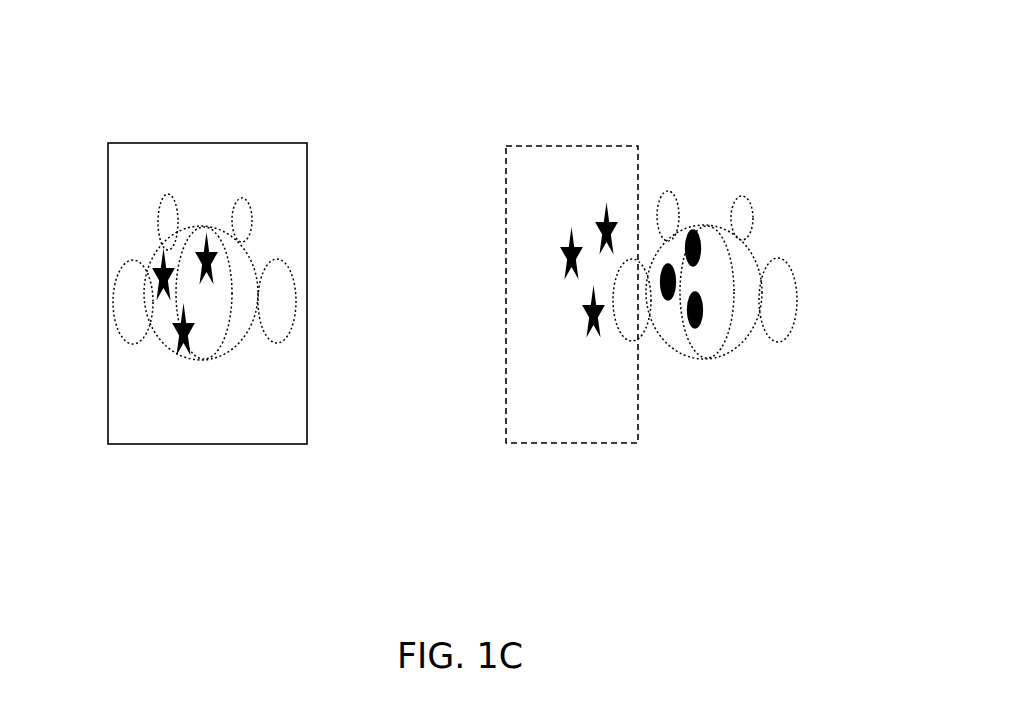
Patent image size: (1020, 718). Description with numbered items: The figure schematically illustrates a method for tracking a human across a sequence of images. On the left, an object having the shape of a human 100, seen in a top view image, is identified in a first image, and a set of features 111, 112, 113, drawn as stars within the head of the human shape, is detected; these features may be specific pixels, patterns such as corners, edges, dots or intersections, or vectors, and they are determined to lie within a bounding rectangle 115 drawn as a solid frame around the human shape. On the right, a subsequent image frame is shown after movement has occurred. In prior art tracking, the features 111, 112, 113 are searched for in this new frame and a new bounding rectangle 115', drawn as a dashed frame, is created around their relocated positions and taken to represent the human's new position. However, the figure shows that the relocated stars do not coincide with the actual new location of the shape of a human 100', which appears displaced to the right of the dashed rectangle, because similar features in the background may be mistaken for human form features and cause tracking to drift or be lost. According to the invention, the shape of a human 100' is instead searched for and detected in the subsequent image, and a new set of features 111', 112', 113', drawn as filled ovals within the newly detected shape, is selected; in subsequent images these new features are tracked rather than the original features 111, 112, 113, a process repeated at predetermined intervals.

The shape of a human 100 is at (248, 377).
The bounding rectangle 115 is at (207, 231).
The feature 111 is at (310, 230).
The feature 112 is at (441, 145).
The feature 113 is at (388, 319).
The new bounding rectangle 115' is at (572, 221).
The shape of a human 100' is at (719, 340).
The feature 111' is at (753, 218).
The feature 112' is at (727, 196).
The feature 113' is at (682, 374).